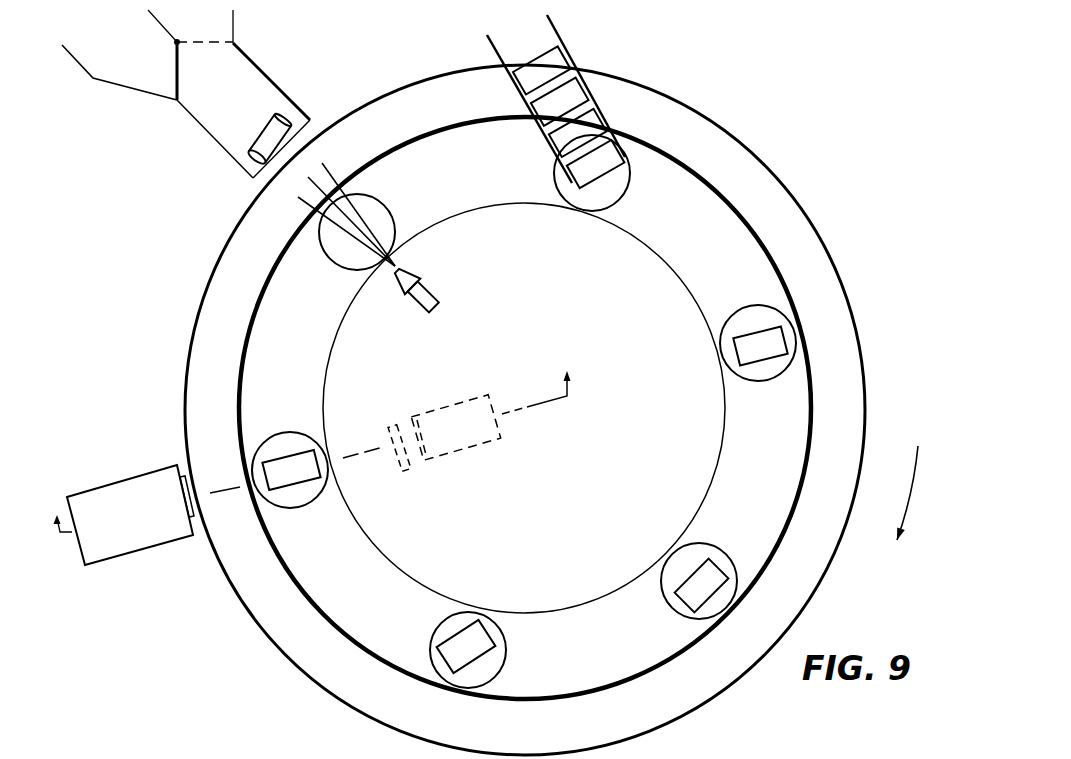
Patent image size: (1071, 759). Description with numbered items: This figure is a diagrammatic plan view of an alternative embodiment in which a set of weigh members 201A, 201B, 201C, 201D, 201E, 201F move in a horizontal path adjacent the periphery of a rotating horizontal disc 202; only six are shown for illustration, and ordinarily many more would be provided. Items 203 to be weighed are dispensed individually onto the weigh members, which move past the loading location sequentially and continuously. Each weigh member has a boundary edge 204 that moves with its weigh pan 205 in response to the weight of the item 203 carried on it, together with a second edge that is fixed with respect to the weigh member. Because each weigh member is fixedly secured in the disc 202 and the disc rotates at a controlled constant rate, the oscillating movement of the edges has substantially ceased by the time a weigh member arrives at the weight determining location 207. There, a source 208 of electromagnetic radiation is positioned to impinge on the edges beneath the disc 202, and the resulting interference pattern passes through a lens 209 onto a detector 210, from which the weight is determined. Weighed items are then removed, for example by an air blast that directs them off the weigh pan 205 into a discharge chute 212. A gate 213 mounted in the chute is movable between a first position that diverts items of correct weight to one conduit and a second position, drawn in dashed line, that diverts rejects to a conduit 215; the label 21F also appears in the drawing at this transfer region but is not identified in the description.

The transfer station 21F is at (233, 18).
The discharge chute 212 is at (260, 87).
The gate 213 is at (177, 80).
The conduit 215 is at (155, 78).
The item 203 is at (288, 118).
The boundary edge 204 is at (551, 26).
The weigh member 201A is at (630, 183).
The weigh member 201B is at (743, 305).
The weigh member 201C is at (728, 543).
The weigh member 201D is at (503, 663).
The weigh member 201E is at (298, 510).
The weigh member 201F is at (385, 203).
The weigh pan 205 is at (343, 252).
The rotating horizontal disc 202 is at (637, 427).
The weight determining location 207 is at (240, 533).
The source of electromagnetic radiation 208 is at (147, 532).
The lens 209 is at (407, 490).
The detector 210 is at (458, 458).